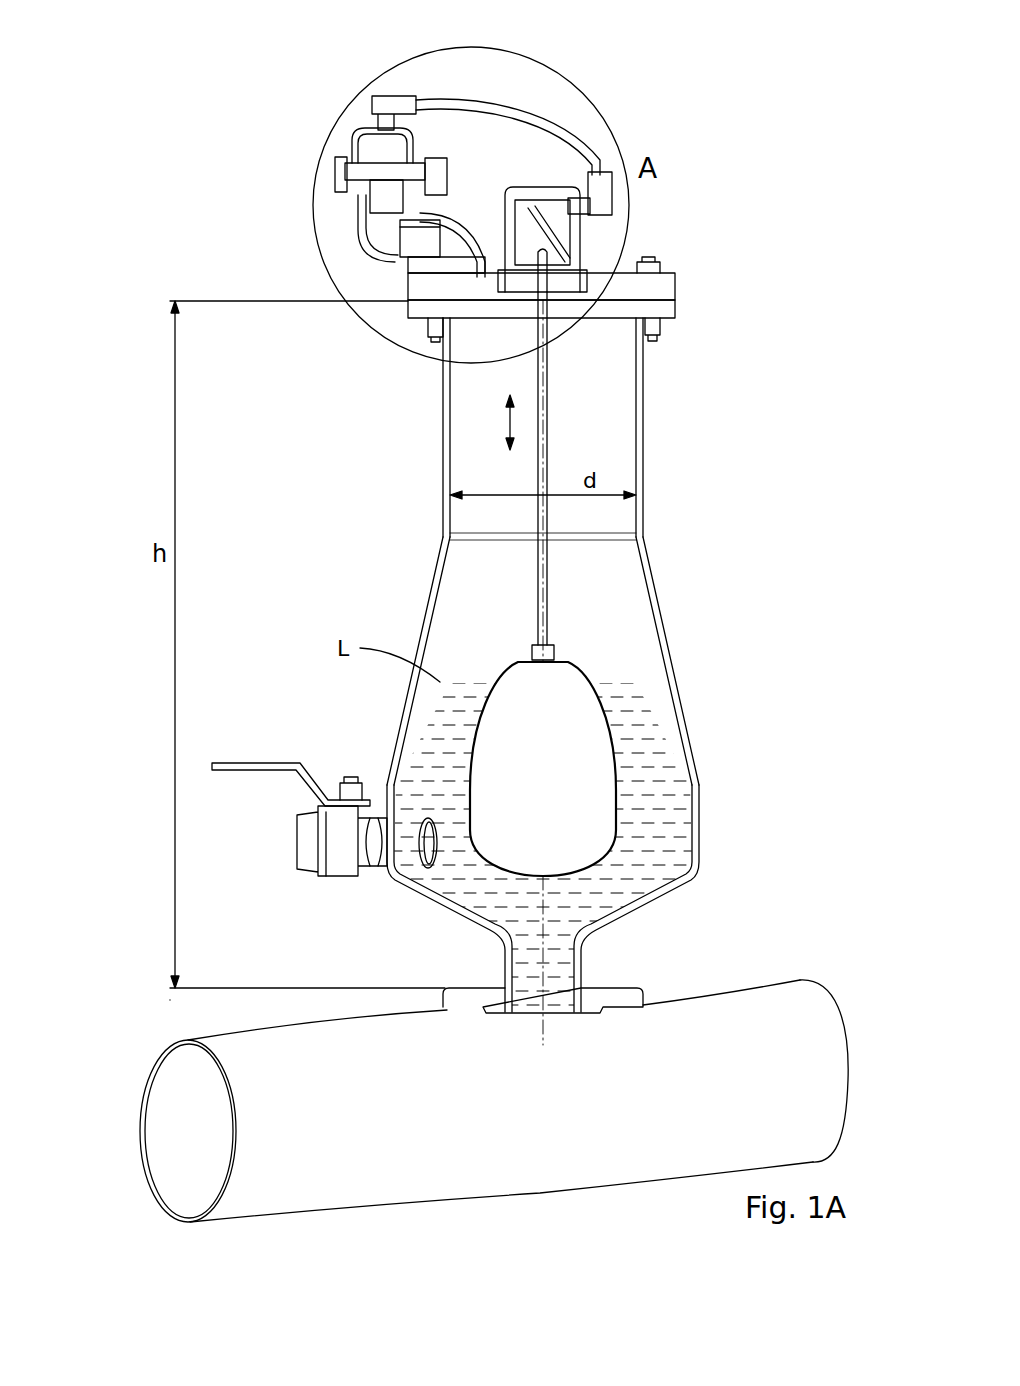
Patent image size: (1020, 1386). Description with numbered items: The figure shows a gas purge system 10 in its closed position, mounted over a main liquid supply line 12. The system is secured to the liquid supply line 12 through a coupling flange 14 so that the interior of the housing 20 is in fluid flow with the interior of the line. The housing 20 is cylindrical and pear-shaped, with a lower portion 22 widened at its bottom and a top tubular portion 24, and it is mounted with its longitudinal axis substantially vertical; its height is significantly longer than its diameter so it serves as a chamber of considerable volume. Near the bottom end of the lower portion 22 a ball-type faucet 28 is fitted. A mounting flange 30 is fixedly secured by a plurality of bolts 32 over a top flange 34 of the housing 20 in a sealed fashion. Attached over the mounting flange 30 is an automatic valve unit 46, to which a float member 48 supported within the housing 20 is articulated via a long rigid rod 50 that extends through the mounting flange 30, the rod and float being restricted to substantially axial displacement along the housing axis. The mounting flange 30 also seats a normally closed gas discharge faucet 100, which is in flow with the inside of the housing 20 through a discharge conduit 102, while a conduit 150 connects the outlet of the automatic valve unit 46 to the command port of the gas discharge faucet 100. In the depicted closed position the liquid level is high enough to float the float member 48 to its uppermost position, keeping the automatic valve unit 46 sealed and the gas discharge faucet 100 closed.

The gas purge system 10 is at (158, 944).
The main liquid supply line 12 is at (418, 1135).
The coupling flange 14 is at (613, 1000).
The housing 20 is at (665, 592).
The lower portion 22 is at (703, 846).
The top tubular portion 24 is at (643, 438).
The ball-type faucet 28 is at (333, 872).
The mounting flange 30 is at (665, 290).
The bolts 32 is at (650, 267).
The top flange 34 is at (668, 320).
The automatic valve unit 46 is at (548, 148).
The float member 48 is at (570, 778).
The rigid rod 50 is at (549, 628).
The gas discharge faucet 100 is at (286, 165).
The discharge conduit 102 is at (370, 252).
The conduit 150 is at (496, 108).